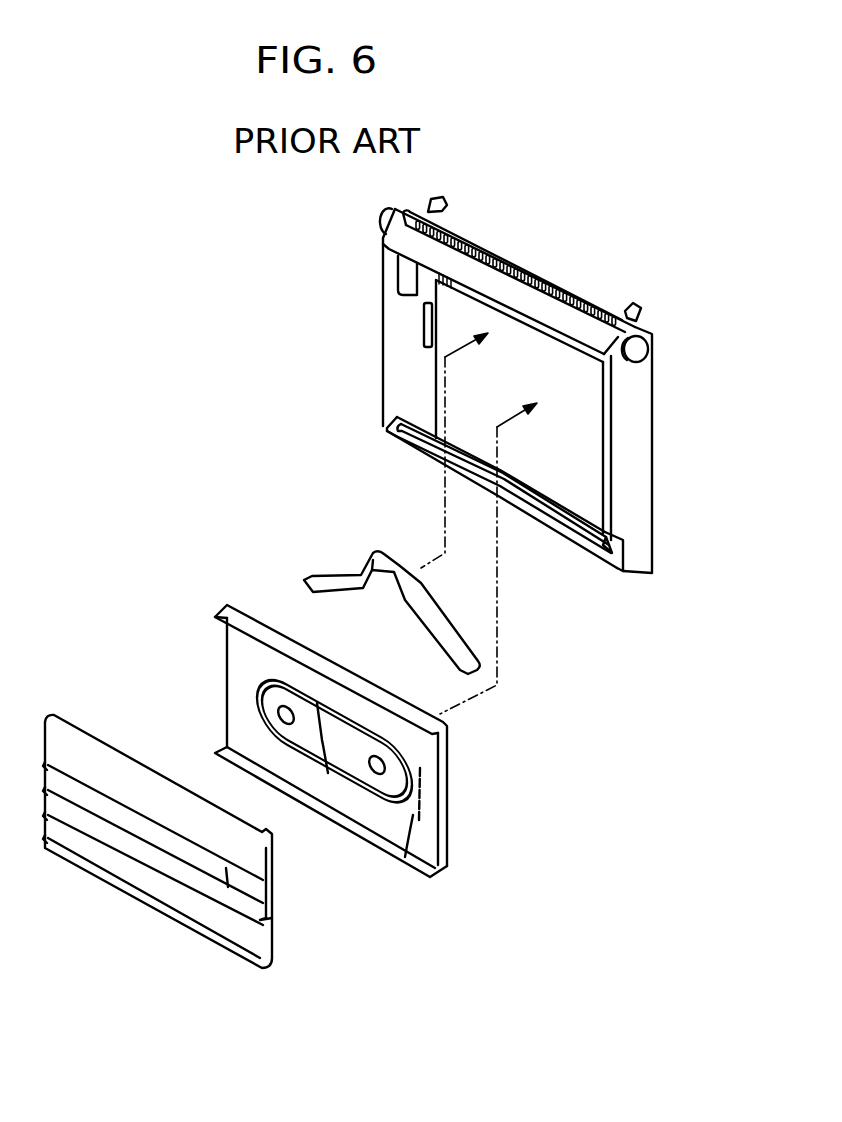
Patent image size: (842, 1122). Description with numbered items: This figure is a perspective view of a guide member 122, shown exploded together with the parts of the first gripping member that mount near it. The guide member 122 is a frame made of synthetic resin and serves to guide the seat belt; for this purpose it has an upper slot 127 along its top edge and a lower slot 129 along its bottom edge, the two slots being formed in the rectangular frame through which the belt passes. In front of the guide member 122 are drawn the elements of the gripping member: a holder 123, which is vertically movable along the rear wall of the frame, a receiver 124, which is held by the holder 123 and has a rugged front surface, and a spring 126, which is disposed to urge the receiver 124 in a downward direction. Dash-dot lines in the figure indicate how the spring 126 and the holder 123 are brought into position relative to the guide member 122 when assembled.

The guide member 122 is at (642, 451).
The holder 123 is at (448, 802).
The receiver 124 is at (243, 940).
The spring 126 is at (342, 579).
The upper slot 127 is at (525, 268).
The lower slot 129 is at (583, 503).